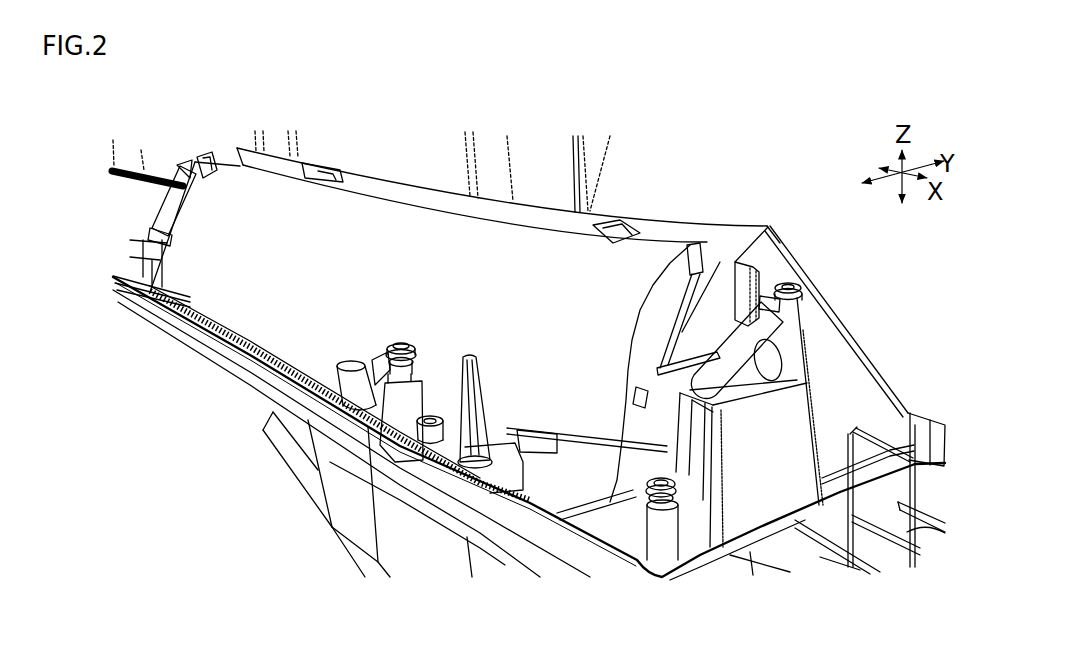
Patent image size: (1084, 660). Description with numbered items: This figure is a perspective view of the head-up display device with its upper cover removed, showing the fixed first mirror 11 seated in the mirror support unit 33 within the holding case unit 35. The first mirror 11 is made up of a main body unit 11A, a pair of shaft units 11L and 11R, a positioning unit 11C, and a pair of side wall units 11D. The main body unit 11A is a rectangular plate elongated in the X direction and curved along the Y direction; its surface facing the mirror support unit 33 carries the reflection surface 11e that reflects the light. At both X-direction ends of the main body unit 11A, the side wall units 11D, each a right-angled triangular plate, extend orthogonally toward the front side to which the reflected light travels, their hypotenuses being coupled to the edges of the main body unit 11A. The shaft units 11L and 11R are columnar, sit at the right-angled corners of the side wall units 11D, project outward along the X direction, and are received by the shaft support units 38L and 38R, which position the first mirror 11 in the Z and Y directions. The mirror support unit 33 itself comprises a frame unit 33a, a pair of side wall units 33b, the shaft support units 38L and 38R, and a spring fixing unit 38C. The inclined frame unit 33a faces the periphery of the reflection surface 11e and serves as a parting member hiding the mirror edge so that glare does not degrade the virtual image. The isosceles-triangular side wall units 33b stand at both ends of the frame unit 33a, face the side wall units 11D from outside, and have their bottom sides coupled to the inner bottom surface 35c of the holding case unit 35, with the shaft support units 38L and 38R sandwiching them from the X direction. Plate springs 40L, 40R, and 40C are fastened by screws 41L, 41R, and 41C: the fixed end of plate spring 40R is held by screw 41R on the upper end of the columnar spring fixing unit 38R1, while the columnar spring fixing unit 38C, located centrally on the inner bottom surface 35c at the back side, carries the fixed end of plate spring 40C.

The first mirror 11 is at (590, 231).
The main body unit 11A is at (432, 224).
The positioning unit 11C is at (329, 365).
The side wall unit 11D is at (129, 260).
The shaft unit 11L is at (165, 219).
The shaft unit 11R is at (762, 360).
The reflection surface 11e is at (573, 453).
The mirror support unit 33 is at (758, 225).
The frame unit 33a is at (530, 220).
The side wall unit 33b is at (820, 323).
The holding case unit 35 is at (208, 365).
The inner bottom surface 35c is at (297, 388).
The spring fixing unit 38C is at (402, 411).
The shaft support unit 38L is at (126, 246).
The shaft support unit 38R is at (816, 417).
The spring fixing unit 38R1 is at (807, 345).
The plate spring 40C is at (375, 352).
The plate spring 40L is at (160, 202).
The plate spring 40R is at (695, 270).
The screw 41C is at (401, 342).
The screw 41L is at (193, 161).
The screw 41R is at (789, 282).